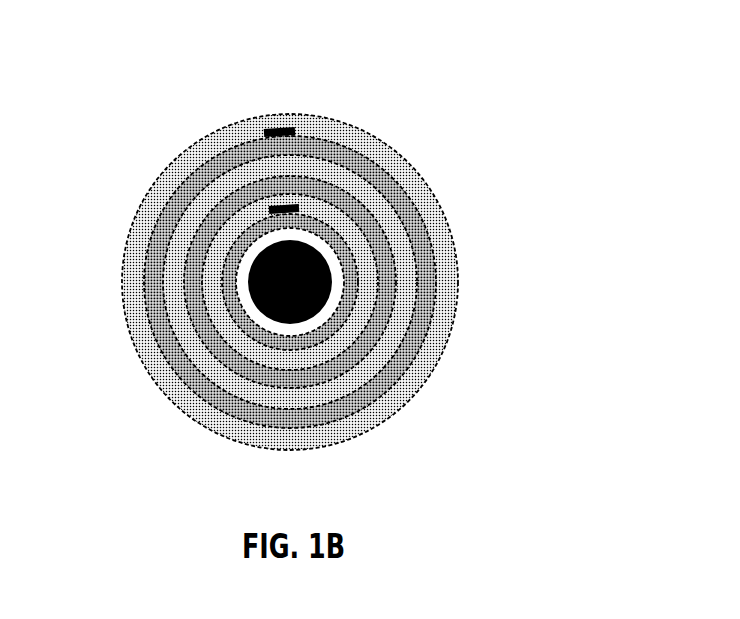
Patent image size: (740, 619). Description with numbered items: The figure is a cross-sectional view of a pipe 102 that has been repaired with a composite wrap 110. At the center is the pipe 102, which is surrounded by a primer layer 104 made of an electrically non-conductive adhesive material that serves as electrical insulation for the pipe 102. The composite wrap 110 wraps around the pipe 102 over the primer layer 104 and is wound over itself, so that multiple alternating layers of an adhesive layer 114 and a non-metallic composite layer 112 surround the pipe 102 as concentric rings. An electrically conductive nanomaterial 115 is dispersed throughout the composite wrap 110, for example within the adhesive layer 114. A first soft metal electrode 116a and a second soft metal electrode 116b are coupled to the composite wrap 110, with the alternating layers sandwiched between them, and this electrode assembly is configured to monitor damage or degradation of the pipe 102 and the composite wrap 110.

The pipe 102 is at (333, 282).
The primer layer 104 is at (235, 295).
The composite wrap 110 is at (307, 251).
The non-metallic composite layer 112 is at (453, 230).
The adhesive layer 114 is at (438, 296).
The electrically conductive nanomaterial 115 is at (146, 282).
The first soft metal electrode 116a is at (267, 209).
The second soft metal electrode 116b is at (294, 132).